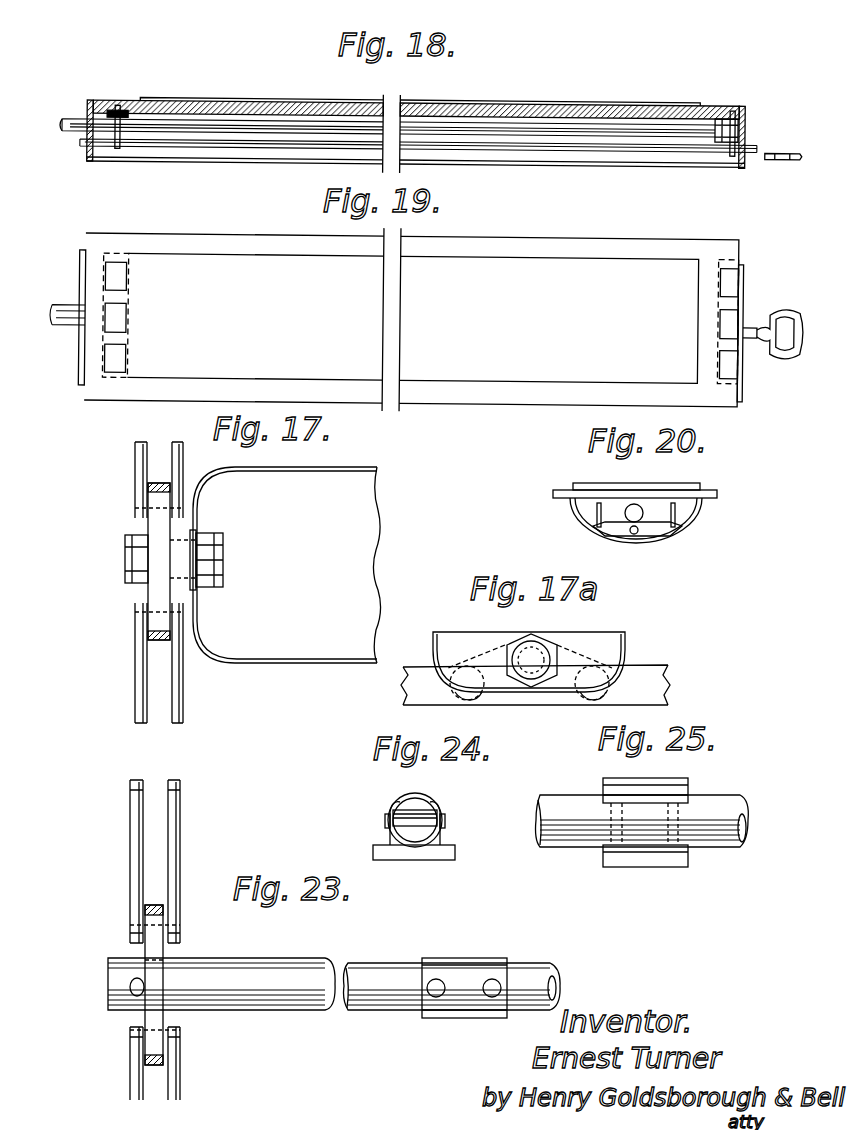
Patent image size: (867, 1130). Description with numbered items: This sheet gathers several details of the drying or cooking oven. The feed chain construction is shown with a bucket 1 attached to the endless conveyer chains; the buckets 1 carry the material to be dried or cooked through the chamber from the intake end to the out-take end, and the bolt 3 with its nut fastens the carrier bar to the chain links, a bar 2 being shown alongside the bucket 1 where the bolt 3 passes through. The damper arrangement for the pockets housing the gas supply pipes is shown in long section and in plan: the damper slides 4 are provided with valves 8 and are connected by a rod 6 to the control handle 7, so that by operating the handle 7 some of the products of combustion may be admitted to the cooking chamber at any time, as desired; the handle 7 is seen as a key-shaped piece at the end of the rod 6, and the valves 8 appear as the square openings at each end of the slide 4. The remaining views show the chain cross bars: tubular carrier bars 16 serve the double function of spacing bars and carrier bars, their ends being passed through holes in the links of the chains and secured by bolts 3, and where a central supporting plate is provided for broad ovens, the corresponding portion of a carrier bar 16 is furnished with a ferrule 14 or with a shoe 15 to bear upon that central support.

In FIG. 17, the bucket 1 is at (287, 565).
In FIG. 17a, the bucket 1 is at (625, 648).
In FIG. 17, the plate / bar 2 is at (152, 525).
In FIG. 17a, the plate / bar 2 is at (553, 700).
In FIG. 17, the bolt 3 is at (140, 556).
In FIG. 17a, the bolt 3 is at (530, 668).
In FIG. 18, the damper slide 4 is at (112, 110).
In FIG. 20, the damper slide 4 is at (688, 502).
In FIG. 18, the rod 6 is at (663, 150).
In FIG. 20, the rod 6 is at (638, 535).
In FIG. 18, the control handle 7 is at (790, 154).
In FIG. 19, the control handle 7 is at (790, 352).
In FIG. 18, the valve 8 is at (118, 104).
In FIG. 19, the valve 8 is at (108, 272).
In FIG. 23, the ferrule 14 is at (472, 962).
In FIG. 24, the shoe 15 is at (430, 848).
In FIG. 25, the shoe 15 is at (655, 862).
In FIG. 24, the tubular carrier bar 16 is at (405, 795).
In FIG. 25, the tubular carrier bar 16 is at (722, 803).
In FIG. 23, the tubular carrier bar 16 is at (383, 972).